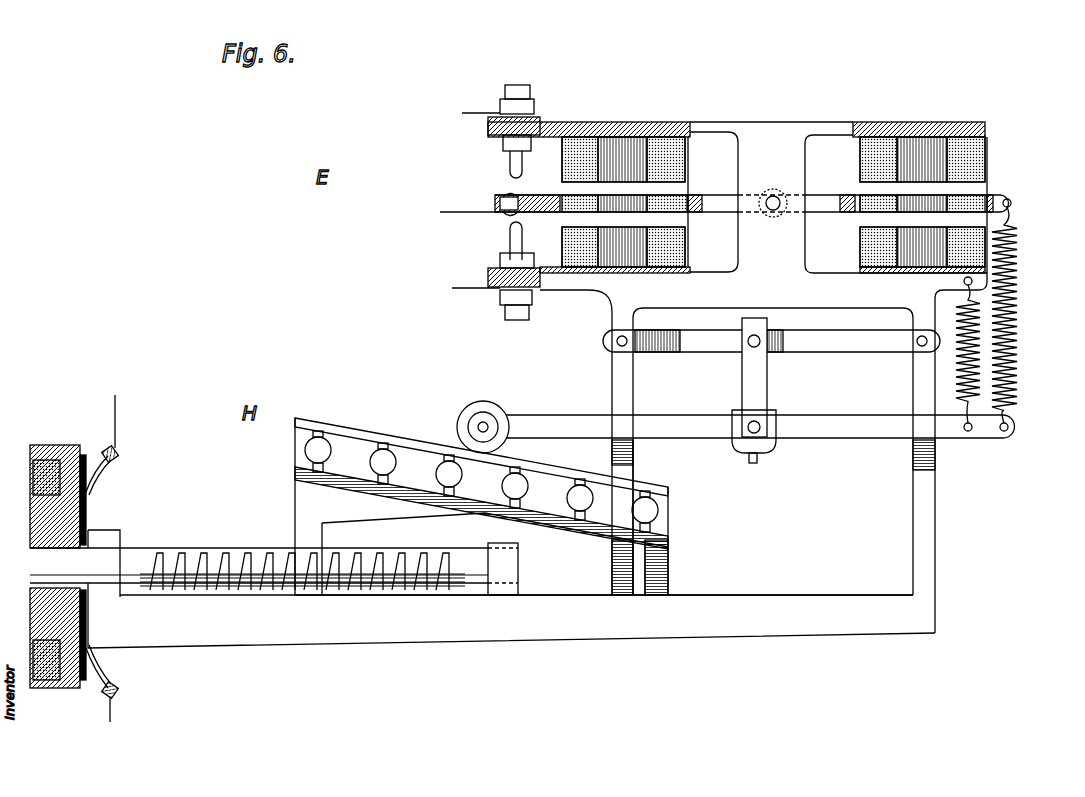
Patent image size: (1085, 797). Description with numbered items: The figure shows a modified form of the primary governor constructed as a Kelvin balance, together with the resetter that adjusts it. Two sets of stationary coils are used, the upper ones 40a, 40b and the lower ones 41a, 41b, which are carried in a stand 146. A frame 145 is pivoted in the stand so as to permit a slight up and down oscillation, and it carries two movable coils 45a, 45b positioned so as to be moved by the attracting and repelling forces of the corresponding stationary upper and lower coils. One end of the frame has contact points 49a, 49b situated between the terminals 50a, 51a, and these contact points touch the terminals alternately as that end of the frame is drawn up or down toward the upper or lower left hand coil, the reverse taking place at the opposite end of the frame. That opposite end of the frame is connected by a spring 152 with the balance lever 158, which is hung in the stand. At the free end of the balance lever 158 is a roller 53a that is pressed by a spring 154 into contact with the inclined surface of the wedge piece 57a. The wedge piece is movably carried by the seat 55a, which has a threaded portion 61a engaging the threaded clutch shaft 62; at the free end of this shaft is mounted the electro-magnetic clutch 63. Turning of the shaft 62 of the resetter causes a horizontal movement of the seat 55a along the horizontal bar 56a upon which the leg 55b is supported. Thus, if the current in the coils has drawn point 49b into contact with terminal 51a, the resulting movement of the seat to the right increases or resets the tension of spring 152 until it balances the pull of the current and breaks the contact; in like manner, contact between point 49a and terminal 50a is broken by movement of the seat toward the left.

The upper stationary coil 40a is at (690, 152).
The upper stationary coil 40b is at (978, 147).
The lower stationary coil 41a is at (680, 252).
The lower stationary coil 41b is at (856, 270).
The movable coil 45a is at (682, 202).
The movable coil 45b is at (857, 215).
The contact point 49a is at (512, 198).
The contact point 49b is at (512, 214).
The terminal 50a is at (515, 160).
The terminal 51a is at (516, 242).
The roller 53a is at (500, 388).
The seat 55a is at (310, 493).
The leg 55b is at (666, 574).
The horizontal bar 56a is at (768, 604).
The wedge piece 57a is at (357, 449).
The threaded portion 61a is at (310, 553).
The clutch shaft 62 is at (157, 558).
The electro-magnetic clutch 63 is at (66, 444).
The frame 145 is at (820, 200).
The stand 146 is at (790, 113).
The spring 152 is at (1024, 315).
The spring 154 is at (960, 372).
The balance lever 158 is at (826, 424).